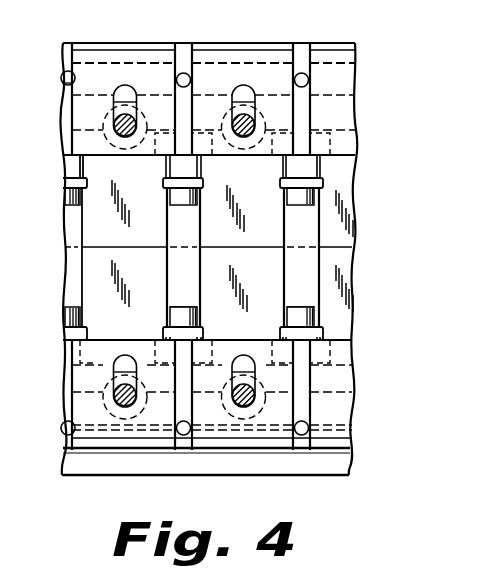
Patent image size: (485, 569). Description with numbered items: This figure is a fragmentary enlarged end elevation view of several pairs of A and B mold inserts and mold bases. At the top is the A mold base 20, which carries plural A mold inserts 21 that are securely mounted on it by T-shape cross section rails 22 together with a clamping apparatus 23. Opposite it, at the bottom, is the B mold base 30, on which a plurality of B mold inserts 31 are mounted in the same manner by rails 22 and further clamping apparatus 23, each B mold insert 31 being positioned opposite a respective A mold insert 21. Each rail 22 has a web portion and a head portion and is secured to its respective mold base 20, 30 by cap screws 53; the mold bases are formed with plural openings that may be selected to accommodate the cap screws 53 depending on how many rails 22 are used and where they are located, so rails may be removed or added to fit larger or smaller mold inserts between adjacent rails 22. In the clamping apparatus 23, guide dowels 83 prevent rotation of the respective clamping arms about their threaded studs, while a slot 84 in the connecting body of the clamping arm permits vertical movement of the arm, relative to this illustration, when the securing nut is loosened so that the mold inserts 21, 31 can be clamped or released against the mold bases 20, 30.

The A mold base 20 is at (68, 118).
The A mold insert 21 is at (92, 222).
The rail 22 is at (65, 174).
The clamping apparatus 23 is at (59, 475).
The B mold base 30 is at (64, 448).
The B mold insert 31 is at (90, 278).
The cap screw 53 is at (64, 197).
The guide dowel 83 is at (62, 79).
The slot 84 is at (114, 382).